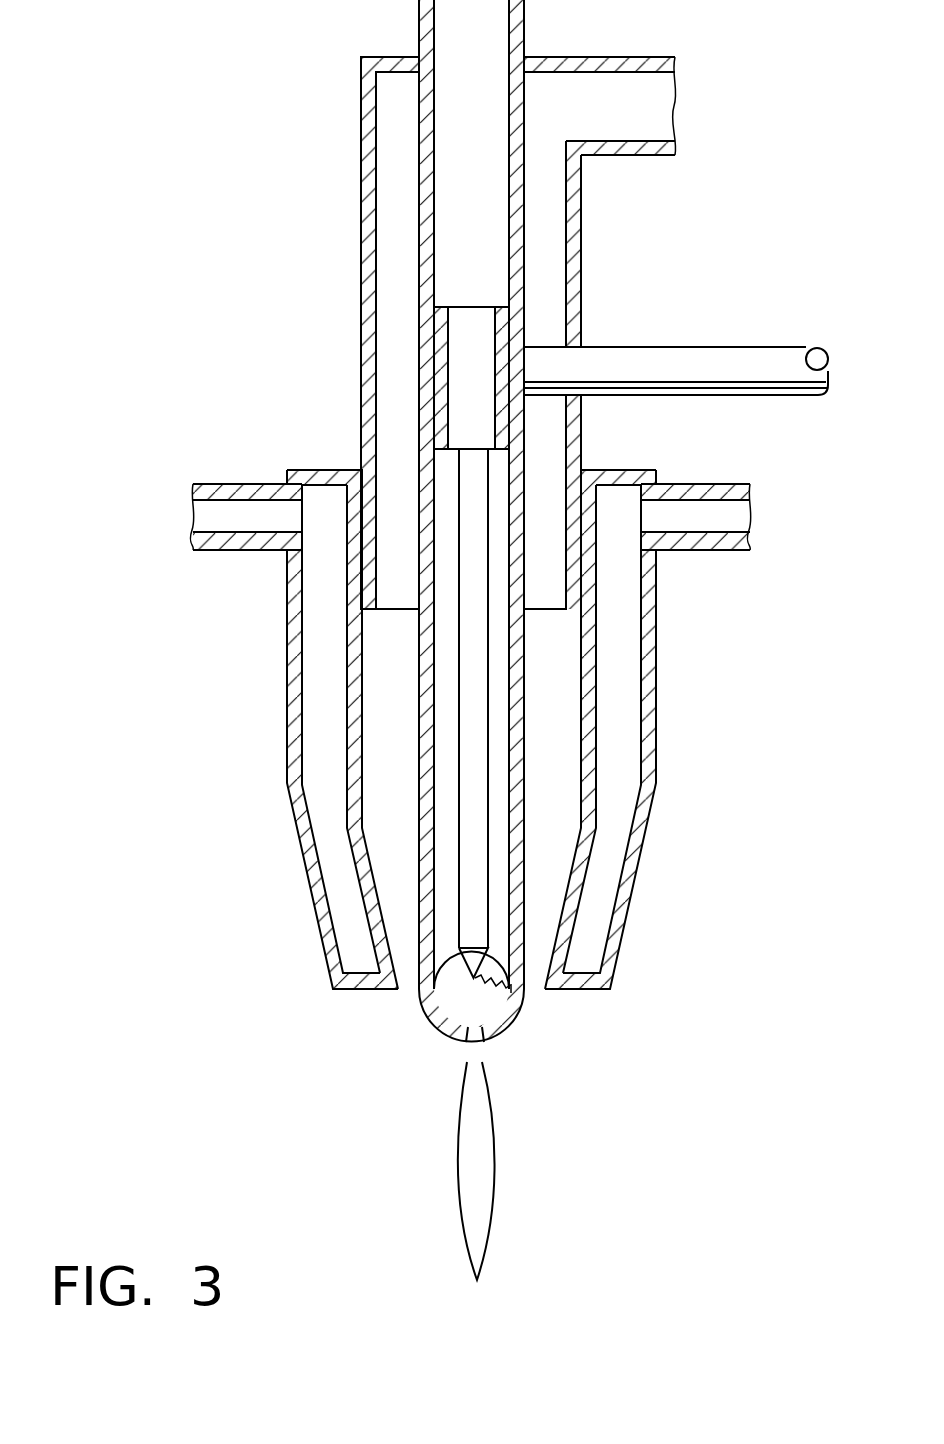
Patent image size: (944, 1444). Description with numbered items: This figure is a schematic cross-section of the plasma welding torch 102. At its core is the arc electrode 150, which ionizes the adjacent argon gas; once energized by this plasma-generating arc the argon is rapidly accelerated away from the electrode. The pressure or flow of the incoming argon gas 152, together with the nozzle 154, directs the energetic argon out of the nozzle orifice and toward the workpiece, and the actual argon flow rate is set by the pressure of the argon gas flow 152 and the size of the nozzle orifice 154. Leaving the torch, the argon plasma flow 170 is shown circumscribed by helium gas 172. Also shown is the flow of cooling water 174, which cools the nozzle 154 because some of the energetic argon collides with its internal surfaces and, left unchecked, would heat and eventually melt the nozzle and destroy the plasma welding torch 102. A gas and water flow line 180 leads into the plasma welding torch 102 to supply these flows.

The plasma welding torch 102 is at (162, 326).
The arc electrode 150 is at (452, 999).
The incoming argon gas 152 is at (500, 735).
The nozzle 154 is at (442, 1058).
The argon plasma flow 170 is at (487, 997).
The helium gas 172 is at (550, 907).
The cooling water flow 174 is at (612, 847).
The gas and water flow line 180 is at (712, 478).